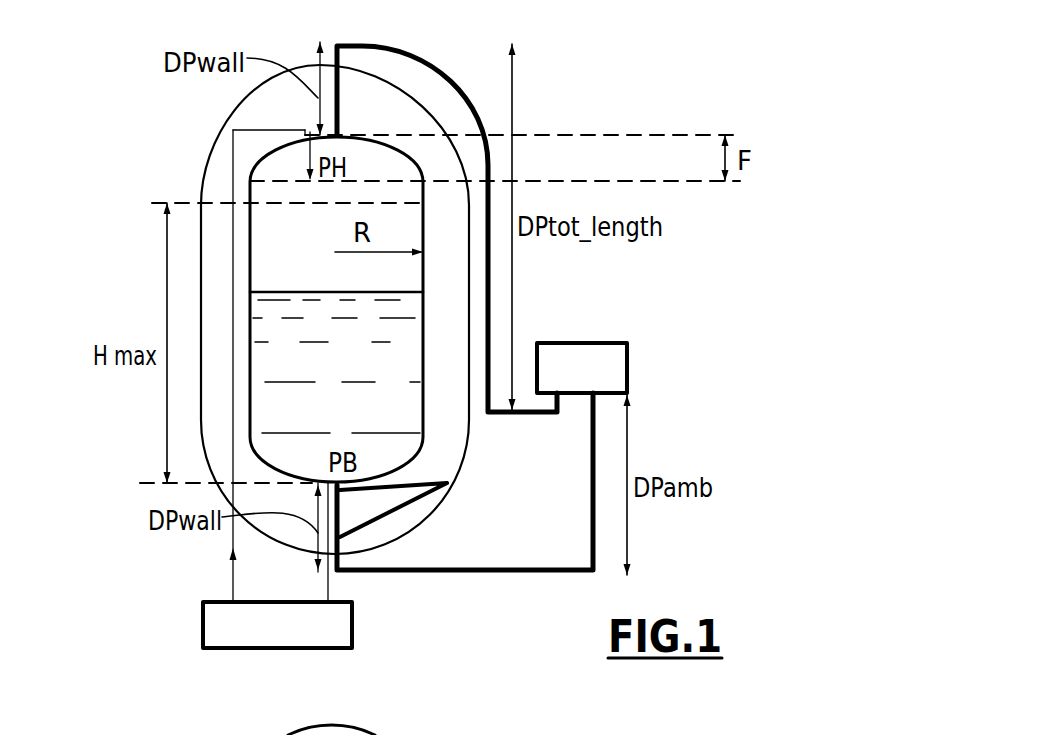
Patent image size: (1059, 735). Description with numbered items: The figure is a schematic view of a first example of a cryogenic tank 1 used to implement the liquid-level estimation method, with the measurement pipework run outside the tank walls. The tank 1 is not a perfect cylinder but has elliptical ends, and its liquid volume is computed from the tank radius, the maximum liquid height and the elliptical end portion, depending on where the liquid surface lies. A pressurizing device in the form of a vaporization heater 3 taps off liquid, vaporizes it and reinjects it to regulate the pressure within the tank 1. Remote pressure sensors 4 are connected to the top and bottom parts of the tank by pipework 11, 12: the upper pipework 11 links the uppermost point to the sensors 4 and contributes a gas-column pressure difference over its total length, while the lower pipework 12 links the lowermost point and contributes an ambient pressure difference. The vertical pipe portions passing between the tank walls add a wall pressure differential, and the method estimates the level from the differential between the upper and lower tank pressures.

The tank 1 is at (138, 435).
The vaporization heater 3 is at (278, 635).
The pressure sensors 4 is at (642, 358).
The pipework 11 is at (443, 66).
The lower pipework 12 is at (478, 582).